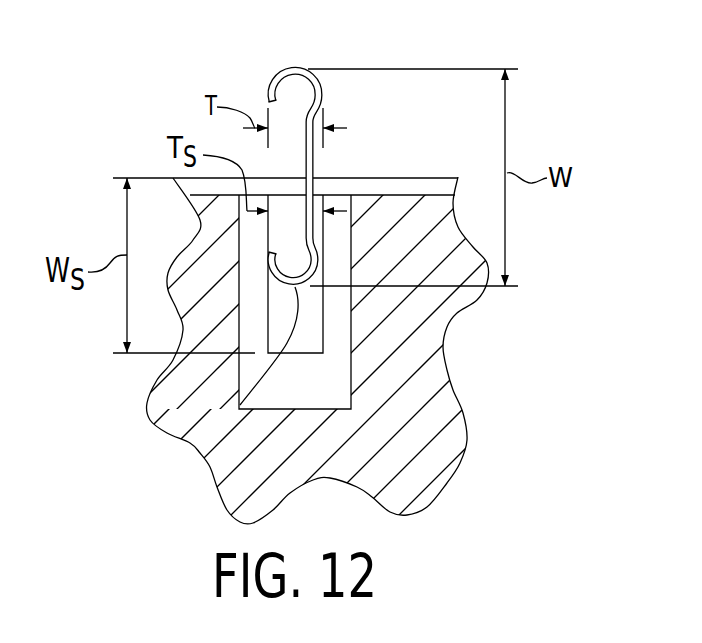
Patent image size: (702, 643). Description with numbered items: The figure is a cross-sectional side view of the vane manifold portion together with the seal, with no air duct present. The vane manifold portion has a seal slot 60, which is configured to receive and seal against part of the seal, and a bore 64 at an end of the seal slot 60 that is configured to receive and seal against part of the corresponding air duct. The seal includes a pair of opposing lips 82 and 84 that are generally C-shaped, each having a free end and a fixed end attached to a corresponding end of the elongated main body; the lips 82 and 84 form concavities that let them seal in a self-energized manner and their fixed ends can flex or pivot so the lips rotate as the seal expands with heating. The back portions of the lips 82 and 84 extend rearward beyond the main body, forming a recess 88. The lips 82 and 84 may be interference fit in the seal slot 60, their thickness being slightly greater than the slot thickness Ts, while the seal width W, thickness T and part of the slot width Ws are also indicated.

The seal slot 60 is at (323, 335).
The bore 64 is at (183, 330).
The lip 82 is at (282, 70).
The lip 84 is at (202, 453).
The recess 88 is at (337, 107).